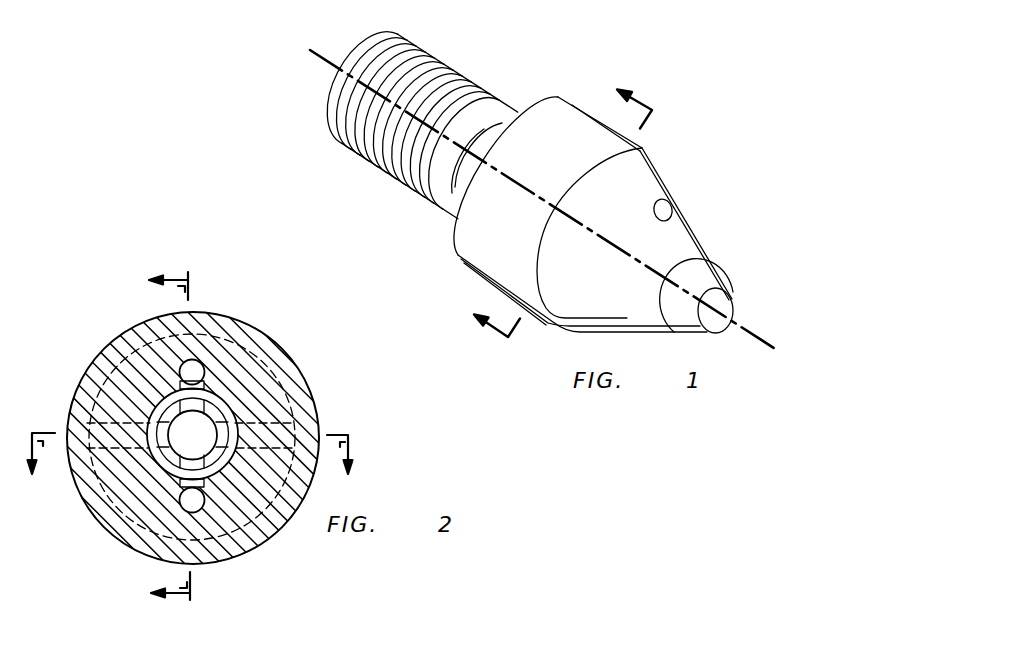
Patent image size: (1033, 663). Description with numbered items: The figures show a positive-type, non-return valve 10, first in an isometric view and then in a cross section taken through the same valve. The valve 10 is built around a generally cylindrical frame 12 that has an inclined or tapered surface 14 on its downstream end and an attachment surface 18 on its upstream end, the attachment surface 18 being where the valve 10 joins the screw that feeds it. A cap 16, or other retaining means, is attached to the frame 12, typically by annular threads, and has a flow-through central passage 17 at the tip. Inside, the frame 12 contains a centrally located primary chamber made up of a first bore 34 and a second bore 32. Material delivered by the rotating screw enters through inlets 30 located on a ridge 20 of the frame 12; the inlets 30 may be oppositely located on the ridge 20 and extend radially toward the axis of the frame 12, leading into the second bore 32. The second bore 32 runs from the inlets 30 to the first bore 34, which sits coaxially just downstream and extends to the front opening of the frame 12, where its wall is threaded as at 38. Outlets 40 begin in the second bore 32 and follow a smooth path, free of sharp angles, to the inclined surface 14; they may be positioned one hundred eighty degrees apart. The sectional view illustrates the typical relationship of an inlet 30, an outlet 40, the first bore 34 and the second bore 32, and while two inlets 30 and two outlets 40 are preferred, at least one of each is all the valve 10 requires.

In FIG. 1, the valve 10 is at (725, 70).
In FIG. 2, the valve 10 is at (79, 311).
In FIG. 1, the frame 12 is at (588, 113).
In FIG. 2, the frame 12 is at (283, 531).
In FIG. 1, the inclined surface 14 is at (683, 212).
In FIG. 1, the cap 16 is at (723, 274).
In FIG. 1, the central passage 17 is at (720, 329).
In FIG. 1, the attachment surface 18 is at (418, 47).
In FIG. 2, the ridge 20 is at (103, 512).
In FIG. 2, the inlet 30 is at (308, 420).
In FIG. 2, the second bore 32 is at (205, 447).
In FIG. 2, the first bore 34 is at (215, 413).
In FIG. 2, the threads 38 is at (233, 416).
In FIG. 1, the outlet 40 is at (654, 210).
In FIG. 2, the outlet 40 is at (195, 368).